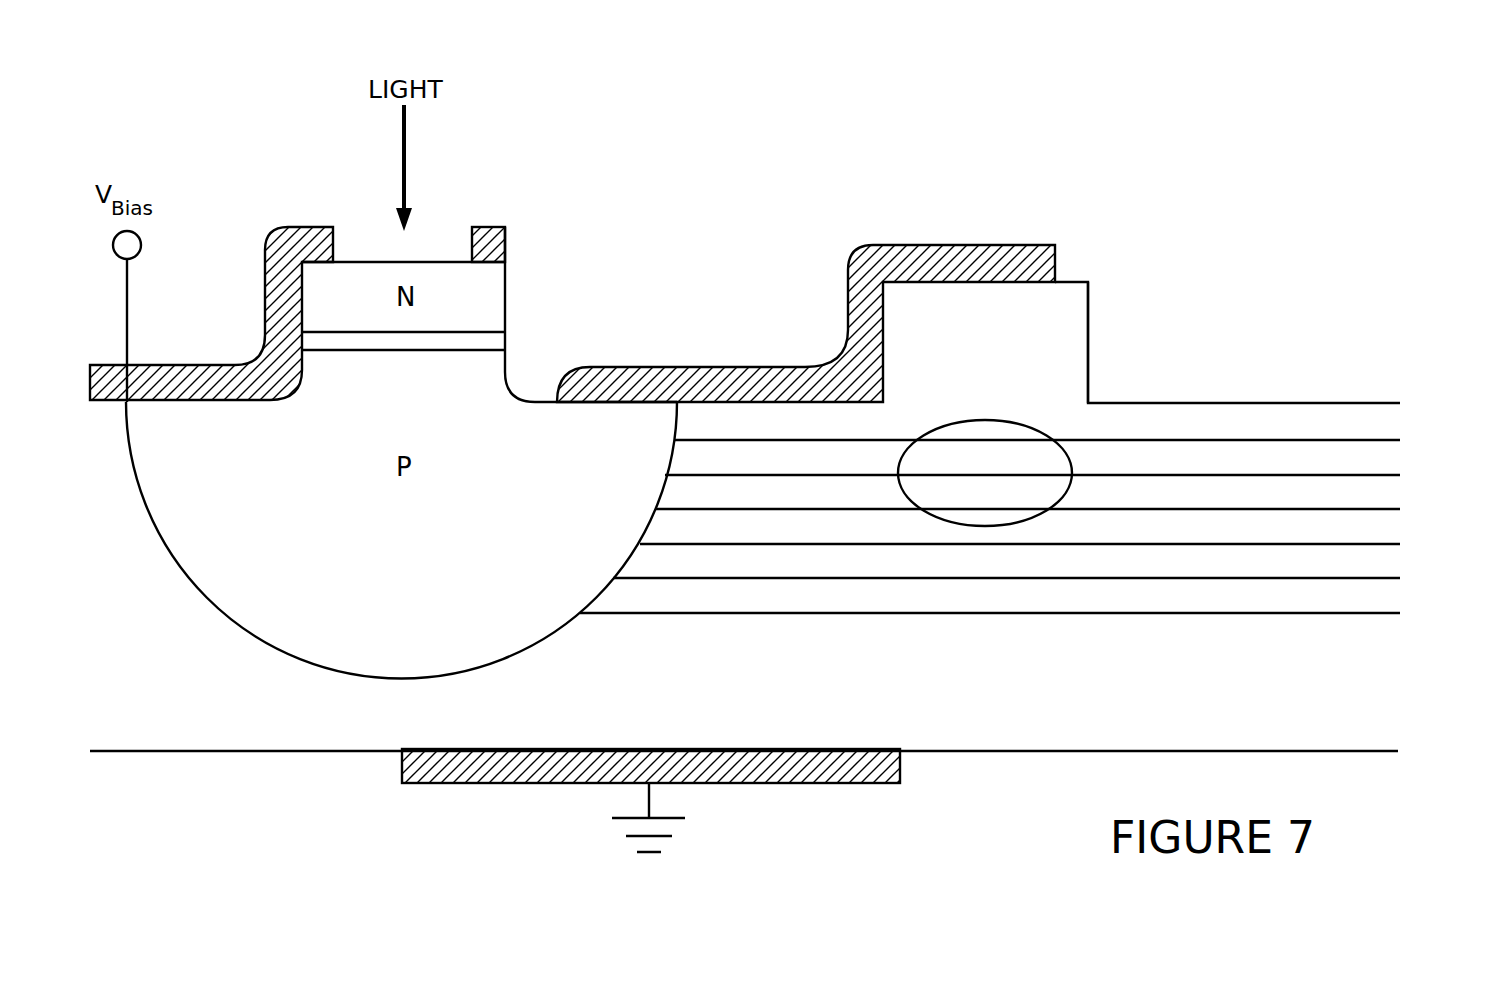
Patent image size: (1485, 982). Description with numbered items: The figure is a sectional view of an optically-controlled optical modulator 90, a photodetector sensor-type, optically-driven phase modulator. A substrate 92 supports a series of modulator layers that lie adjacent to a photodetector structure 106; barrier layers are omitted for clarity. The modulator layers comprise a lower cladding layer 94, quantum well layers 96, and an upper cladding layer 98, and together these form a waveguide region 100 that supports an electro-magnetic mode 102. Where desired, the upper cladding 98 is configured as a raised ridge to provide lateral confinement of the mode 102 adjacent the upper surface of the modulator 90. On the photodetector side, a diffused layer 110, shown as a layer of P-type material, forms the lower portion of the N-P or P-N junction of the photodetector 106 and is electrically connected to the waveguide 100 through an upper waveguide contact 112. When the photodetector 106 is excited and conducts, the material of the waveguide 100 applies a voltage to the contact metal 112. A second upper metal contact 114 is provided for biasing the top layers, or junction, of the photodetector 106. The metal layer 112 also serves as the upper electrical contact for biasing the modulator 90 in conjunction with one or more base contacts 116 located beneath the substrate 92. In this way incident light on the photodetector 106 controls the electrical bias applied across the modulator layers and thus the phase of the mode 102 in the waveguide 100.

The optically-controlled optical modulator 90 is at (1122, 200).
The substrate 92 is at (1377, 710).
The lower cladding layer 94 is at (1392, 595).
The quantum well layers 96 is at (1407, 440).
The upper cladding layer 98 is at (1385, 423).
The waveguide region 100 is at (1102, 388).
The electro-magnetic mode 102 is at (1012, 526).
The photodetector structure 106 is at (522, 373).
The diffused layer 110 is at (275, 648).
The upper waveguide contact 112 is at (738, 367).
The second upper metal contact 114 is at (183, 365).
The base contact 116 is at (510, 783).